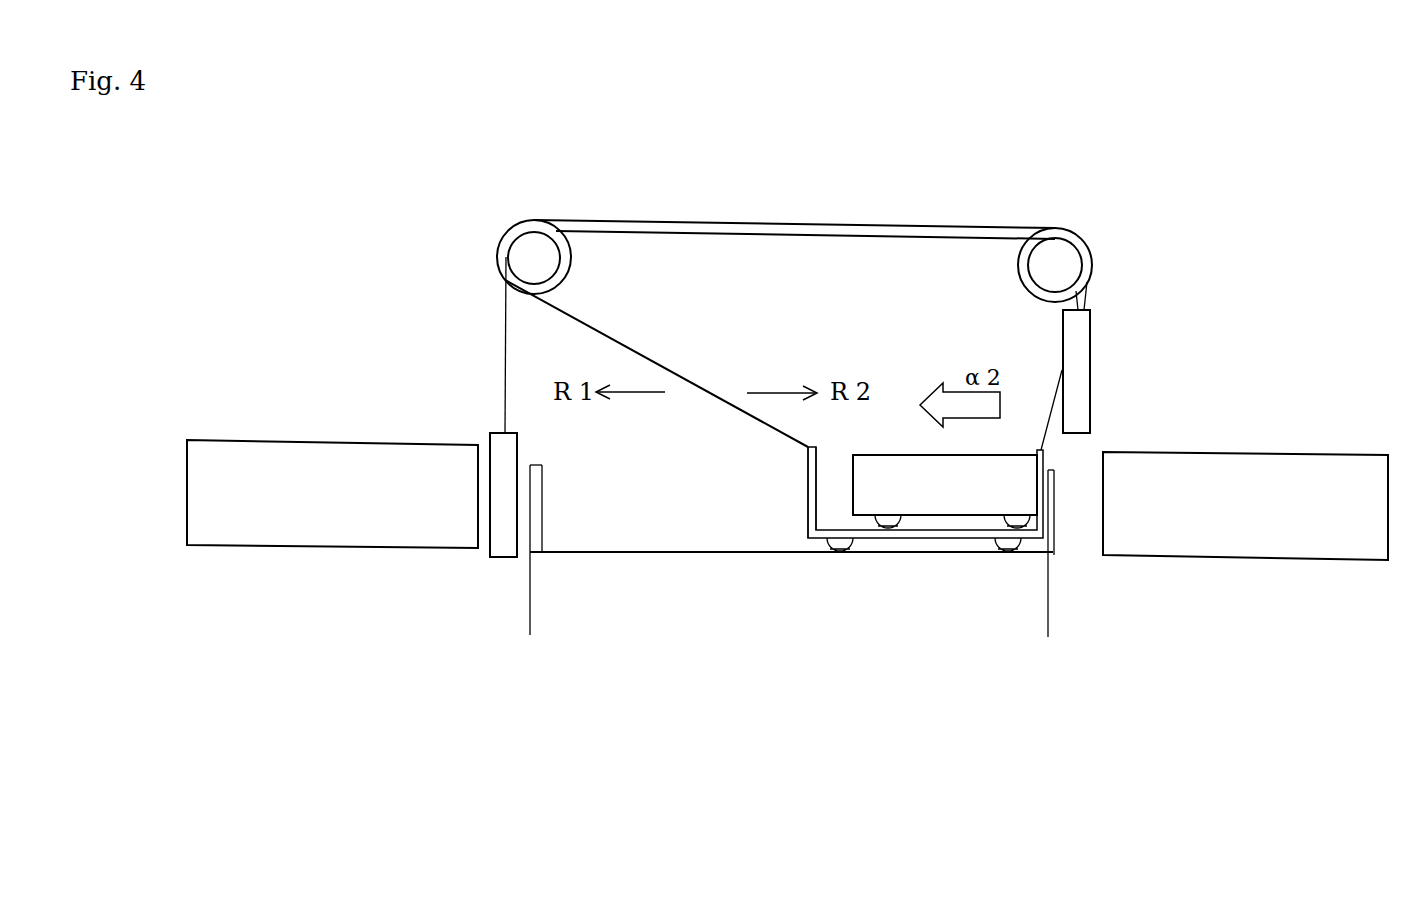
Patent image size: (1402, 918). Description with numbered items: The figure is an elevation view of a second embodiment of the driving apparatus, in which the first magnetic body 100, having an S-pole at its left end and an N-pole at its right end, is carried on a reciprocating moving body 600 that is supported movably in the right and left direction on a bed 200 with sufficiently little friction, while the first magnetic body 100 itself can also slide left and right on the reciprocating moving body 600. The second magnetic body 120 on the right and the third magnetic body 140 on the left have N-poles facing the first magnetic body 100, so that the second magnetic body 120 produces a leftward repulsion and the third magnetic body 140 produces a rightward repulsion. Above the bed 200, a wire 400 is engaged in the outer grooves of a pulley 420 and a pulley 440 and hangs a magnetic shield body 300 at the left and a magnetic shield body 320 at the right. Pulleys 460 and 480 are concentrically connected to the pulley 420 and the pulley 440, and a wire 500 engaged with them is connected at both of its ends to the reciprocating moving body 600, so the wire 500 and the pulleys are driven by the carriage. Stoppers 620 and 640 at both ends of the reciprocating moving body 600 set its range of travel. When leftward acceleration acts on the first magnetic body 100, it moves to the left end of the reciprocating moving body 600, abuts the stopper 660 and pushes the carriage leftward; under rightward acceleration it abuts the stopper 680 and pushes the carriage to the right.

The first magnetic body 100 is at (935, 505).
The second magnetic body 120 is at (1280, 452).
The third magnetic body 140 is at (267, 440).
The bed 200 is at (718, 552).
The magnetic shield body 300 is at (505, 557).
The magnetic shield body 320 is at (1090, 397).
The wire 400 is at (855, 236).
The pulley 420 is at (542, 267).
The pulley 440 is at (1065, 257).
The pulley 460 is at (520, 219).
The pulley 480 is at (1083, 232).
The wire 500 is at (767, 223).
The reciprocating moving body 600 is at (807, 477).
The stopper 620 is at (535, 500).
The stopper 640 is at (1050, 530).
The stopper 660 is at (813, 477).
The stopper 680 is at (1040, 497).